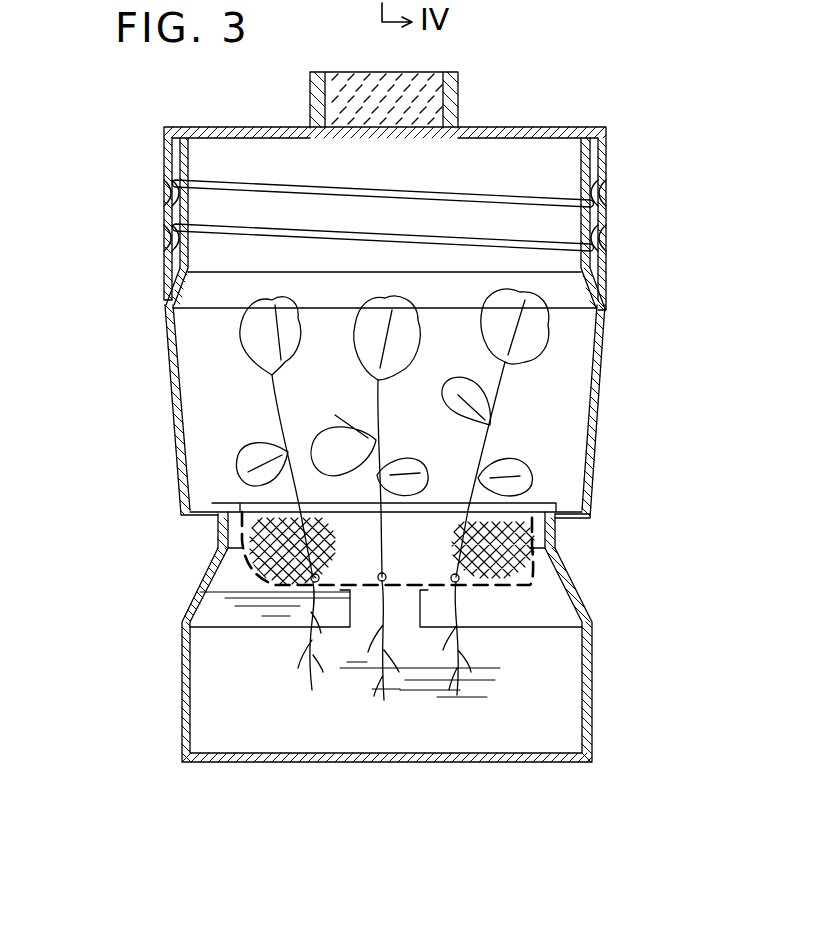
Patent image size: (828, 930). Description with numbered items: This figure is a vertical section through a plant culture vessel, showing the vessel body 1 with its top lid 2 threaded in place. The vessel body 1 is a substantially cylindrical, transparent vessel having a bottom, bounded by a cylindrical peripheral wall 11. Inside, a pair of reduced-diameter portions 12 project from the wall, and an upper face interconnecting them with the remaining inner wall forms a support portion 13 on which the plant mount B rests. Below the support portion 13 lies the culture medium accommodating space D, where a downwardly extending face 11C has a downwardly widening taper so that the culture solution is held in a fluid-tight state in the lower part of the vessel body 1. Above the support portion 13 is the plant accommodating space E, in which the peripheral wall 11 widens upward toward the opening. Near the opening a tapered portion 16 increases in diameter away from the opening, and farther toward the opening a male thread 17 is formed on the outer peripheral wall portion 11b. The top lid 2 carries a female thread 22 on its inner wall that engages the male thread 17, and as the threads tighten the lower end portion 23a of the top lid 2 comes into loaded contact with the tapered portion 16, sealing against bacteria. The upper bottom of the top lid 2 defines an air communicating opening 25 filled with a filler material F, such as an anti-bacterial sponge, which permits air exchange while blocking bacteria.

The vessel body 1 is at (629, 361).
The top lid 2 is at (626, 139).
The cylindrical peripheral wall 11 is at (605, 400).
The outer peripheral wall portion 11b is at (183, 158).
The downwardly extending face 11C is at (545, 585).
The reduced-diameter portion 12 is at (560, 530).
The support portion 13 is at (592, 500).
The tapered portion 16 is at (606, 265).
The male thread 17 is at (168, 192).
The female thread 22 is at (575, 200).
The lower end portion 23a is at (603, 295).
The air communicating opening 25 is at (415, 104).
The filter material F is at (345, 105).
The plant accommodating space E is at (200, 386).
The plant mount B is at (562, 482).
The culture medium accommodating space D is at (212, 689).